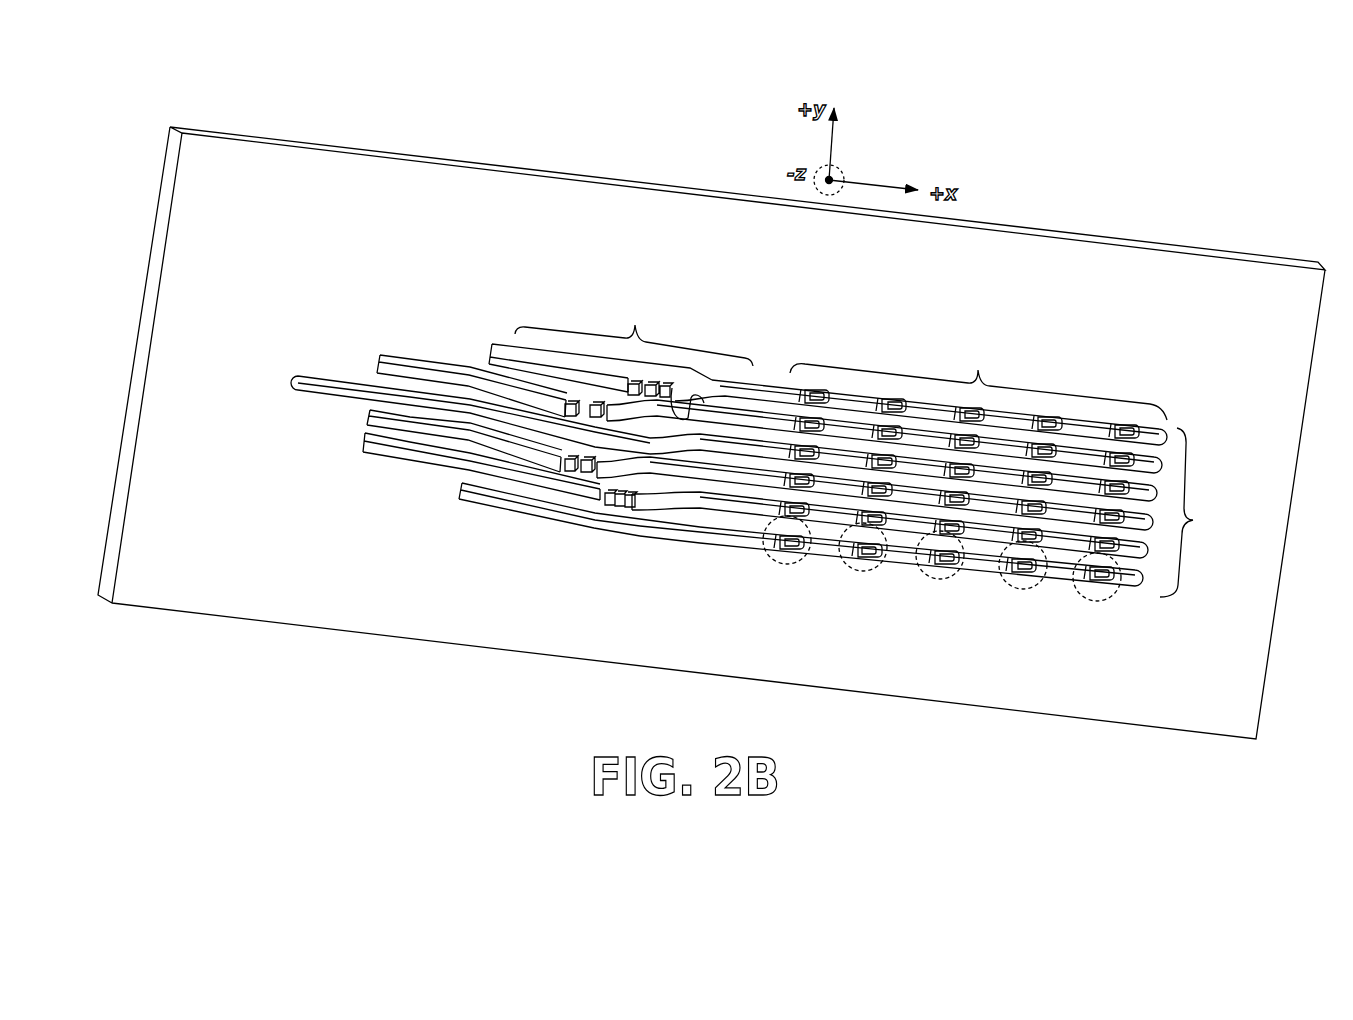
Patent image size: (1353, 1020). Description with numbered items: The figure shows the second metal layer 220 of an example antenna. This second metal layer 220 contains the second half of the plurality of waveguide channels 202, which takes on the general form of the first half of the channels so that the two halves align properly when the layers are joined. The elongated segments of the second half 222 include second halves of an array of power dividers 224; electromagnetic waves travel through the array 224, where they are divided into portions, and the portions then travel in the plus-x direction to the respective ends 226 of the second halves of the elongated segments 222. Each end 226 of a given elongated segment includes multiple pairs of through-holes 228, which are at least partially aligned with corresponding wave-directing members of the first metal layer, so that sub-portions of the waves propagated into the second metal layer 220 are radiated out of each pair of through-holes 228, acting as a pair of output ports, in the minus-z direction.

The second metal layer 220 is at (147, 103).
The second halves of the elongated segments 222 is at (660, 440).
The array of power dividers 224 is at (522, 415).
The ends of the second halves of the elongated segments 226 is at (882, 465).
The waveguide channels 202 is at (696, 487).
The pairs of through-holes 228 is at (1093, 595).